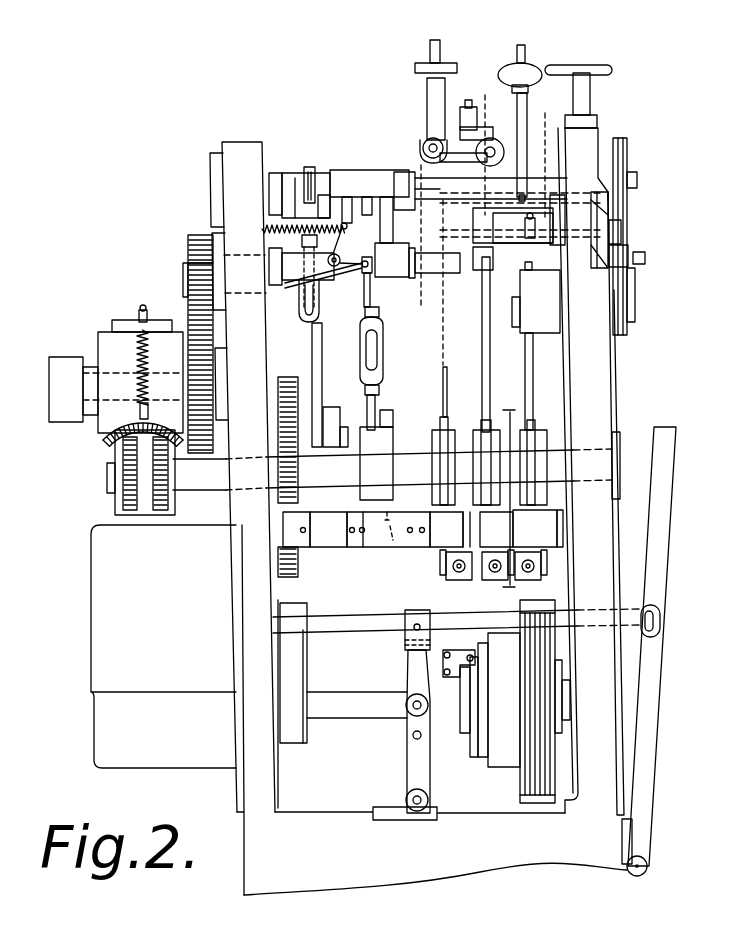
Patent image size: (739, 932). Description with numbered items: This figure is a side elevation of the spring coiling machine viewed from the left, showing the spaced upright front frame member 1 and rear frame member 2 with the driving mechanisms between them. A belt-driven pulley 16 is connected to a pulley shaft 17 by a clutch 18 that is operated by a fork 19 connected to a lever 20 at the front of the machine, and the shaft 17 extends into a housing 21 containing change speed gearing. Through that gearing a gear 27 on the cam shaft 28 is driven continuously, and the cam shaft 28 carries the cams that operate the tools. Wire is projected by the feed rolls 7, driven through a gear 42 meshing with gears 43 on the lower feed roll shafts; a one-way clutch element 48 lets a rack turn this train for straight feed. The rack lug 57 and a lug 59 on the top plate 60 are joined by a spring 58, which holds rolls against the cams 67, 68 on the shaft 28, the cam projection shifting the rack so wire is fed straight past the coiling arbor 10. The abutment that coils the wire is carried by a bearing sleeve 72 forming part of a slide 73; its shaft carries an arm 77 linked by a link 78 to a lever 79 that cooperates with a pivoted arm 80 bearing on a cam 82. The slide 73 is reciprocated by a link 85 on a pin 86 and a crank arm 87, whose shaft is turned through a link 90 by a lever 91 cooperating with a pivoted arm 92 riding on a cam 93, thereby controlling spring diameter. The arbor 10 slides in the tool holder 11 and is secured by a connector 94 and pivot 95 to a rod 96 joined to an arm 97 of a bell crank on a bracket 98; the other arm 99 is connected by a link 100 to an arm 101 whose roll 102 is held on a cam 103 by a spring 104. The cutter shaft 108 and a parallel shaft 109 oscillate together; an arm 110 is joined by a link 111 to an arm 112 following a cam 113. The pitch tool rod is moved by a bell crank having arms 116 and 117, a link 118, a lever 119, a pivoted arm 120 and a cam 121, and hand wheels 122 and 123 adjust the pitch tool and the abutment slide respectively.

The front frame member 1 is at (610, 430).
The rear frame member 2 is at (240, 158).
The feed rolls 7 is at (624, 156).
The coiling arbor 10 is at (620, 238).
The tool holder 11 is at (559, 214).
The pulley 16 is at (537, 768).
The pulley shaft 17 is at (378, 714).
The clutch 18 is at (510, 762).
The fork 19 is at (412, 672).
The lever 20 is at (655, 592).
The housing 21 is at (172, 638).
The gear 27 is at (290, 376).
The cam shaft 28 is at (404, 455).
The feed roll driving gear 42 is at (190, 310).
The gears 43 is at (198, 238).
The clutch element 48 is at (76, 362).
The lug 57 is at (140, 320).
The spring 58 is at (153, 360).
The lug 59 is at (138, 412).
The top plate 60 is at (105, 335).
The cam 67 is at (133, 515).
The cam 68 is at (161, 515).
The bearing sleeve 72 is at (516, 242).
The slide 73 is at (605, 240).
The arm 77 is at (476, 243).
The link 78 is at (483, 308).
The lever 79 is at (489, 582).
The pivoted arm 80 is at (496, 529).
The cam 82 is at (485, 425).
The link 85 is at (630, 256).
The pin 86 is at (645, 262).
The crank arm 87 is at (634, 285).
The link 90 is at (532, 372).
The lever 91 is at (545, 567).
The pivoted arm 92 is at (545, 518).
The cam 93 is at (532, 425).
The connector 94 is at (573, 132).
The pivot 95 is at (511, 147).
The rod 96 is at (372, 190).
The bell crank lever arm 97 is at (326, 195).
The bracket 98 is at (288, 275).
The bell crank lever arm 99 is at (320, 300).
The link 100 is at (374, 300).
The arm 101 is at (376, 549).
The roll 102 is at (399, 549).
The cam 103 is at (385, 410).
The spring 104 is at (293, 215).
The cutter shaft 108 is at (418, 177).
The shaft 109 is at (432, 285).
The projecting arm 110 is at (310, 167).
The link 111 is at (318, 362).
The arm 112 is at (322, 549).
The cam 113 is at (338, 402).
The bell crank lever arm 116 is at (486, 110).
The bell crank lever arm 117 is at (457, 147).
The link 118 is at (447, 380).
The lever 119 is at (450, 577).
The pivoted arm 120 is at (450, 529).
The cam 121 is at (440, 425).
The hand wheel 122 is at (430, 68).
The hand wheel 123 is at (531, 64).